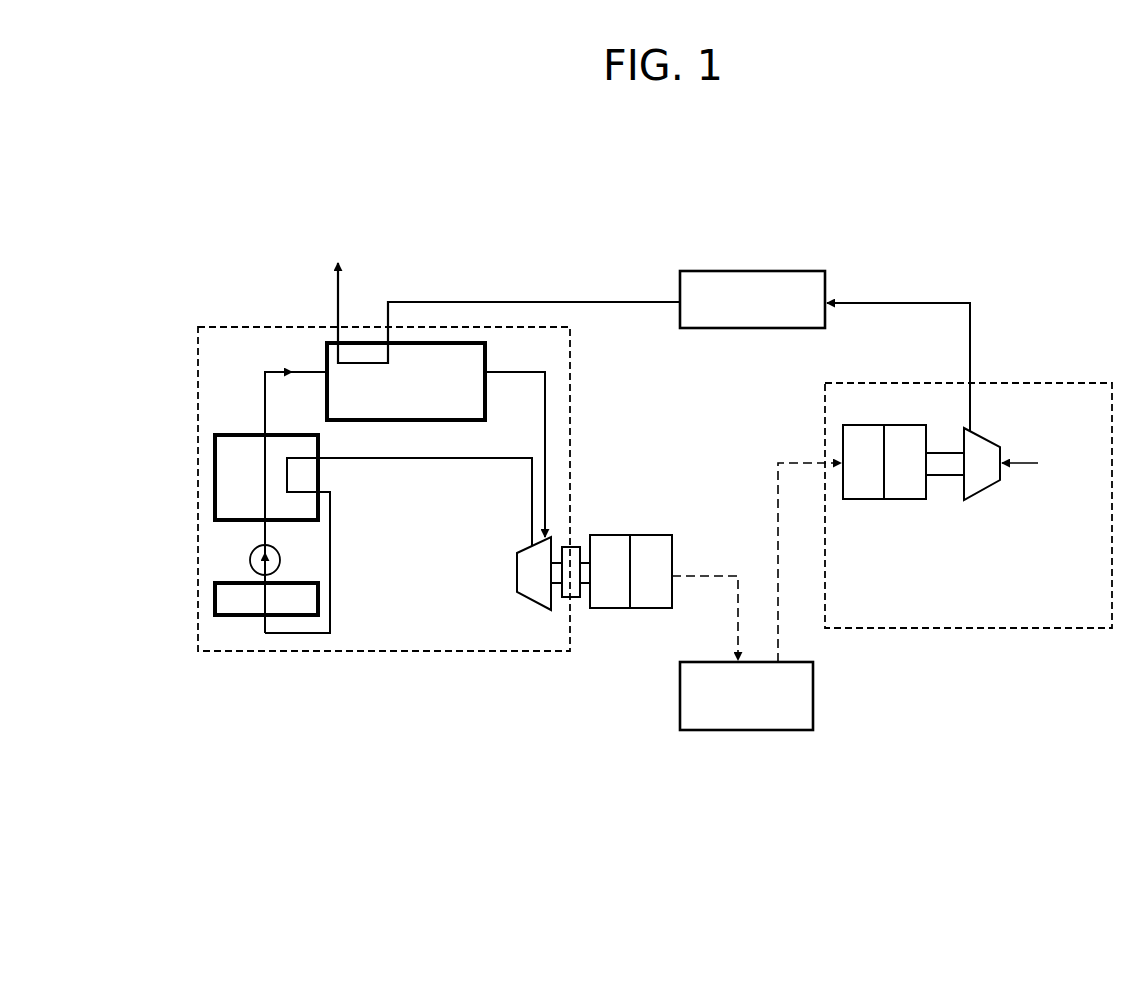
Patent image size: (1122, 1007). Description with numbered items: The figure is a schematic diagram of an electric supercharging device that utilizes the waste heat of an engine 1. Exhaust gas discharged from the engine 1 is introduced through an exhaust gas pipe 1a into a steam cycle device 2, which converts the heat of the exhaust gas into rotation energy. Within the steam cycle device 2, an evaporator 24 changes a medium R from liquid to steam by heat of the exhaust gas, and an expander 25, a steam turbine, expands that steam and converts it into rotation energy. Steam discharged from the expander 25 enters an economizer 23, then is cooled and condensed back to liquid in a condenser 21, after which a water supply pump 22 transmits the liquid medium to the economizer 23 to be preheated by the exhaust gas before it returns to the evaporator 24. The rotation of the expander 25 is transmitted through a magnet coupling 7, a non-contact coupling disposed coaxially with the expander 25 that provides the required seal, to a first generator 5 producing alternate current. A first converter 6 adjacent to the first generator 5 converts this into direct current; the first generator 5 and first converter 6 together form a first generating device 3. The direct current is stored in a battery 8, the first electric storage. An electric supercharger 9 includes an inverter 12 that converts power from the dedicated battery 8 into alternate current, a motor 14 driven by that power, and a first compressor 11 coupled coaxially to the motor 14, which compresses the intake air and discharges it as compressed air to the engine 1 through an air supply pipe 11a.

The engine 1 is at (765, 271).
The exhaust gas pipe 1a is at (442, 302).
The steam cycle device 2 is at (298, 558).
The first generating device 3 is at (611, 618).
The first generator 5 is at (612, 608).
The first converter 6 is at (650, 608).
The magnet coupling 7 is at (575, 552).
The battery 8 is at (813, 700).
The electric supercharger 9 is at (968, 434).
The first compressor 11 is at (985, 433).
The air supply pipe 11a is at (971, 327).
The inverter 12 is at (865, 488).
The motor 14 is at (899, 488).
The condenser 21 is at (240, 615).
The water supply pump 22 is at (250, 554).
The economizer 23 is at (215, 472).
The evaporator 24 is at (485, 360).
The expander 25 is at (517, 573).